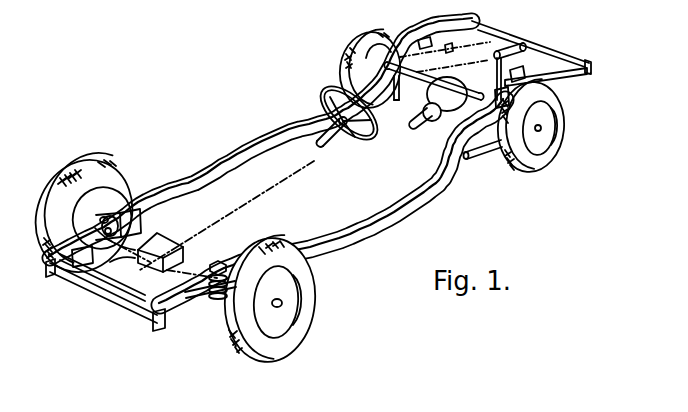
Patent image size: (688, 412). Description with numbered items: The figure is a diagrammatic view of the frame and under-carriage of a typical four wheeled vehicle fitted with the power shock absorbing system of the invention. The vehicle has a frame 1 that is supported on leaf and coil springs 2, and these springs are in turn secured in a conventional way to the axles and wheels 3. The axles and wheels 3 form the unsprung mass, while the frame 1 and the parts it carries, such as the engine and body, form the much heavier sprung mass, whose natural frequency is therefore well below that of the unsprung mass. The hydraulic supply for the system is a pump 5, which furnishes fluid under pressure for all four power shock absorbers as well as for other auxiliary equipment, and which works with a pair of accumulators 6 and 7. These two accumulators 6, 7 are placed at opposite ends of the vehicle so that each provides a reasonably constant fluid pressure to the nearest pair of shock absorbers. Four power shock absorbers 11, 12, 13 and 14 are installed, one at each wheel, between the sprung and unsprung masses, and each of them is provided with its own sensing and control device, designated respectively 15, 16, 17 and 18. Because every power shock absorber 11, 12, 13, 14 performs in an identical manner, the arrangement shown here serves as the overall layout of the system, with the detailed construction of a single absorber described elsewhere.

The frame 1 is at (377, 237).
The leaf and coil springs 2 is at (443, 68).
The axles and wheels 3 is at (363, 38).
The pump 5 is at (162, 240).
The accumulator 6 is at (150, 264).
The accumulator 7 is at (505, 50).
The power shock absorber 11 is at (493, 100).
The power shock absorber 12 is at (401, 90).
The power shock absorber 13 is at (130, 197).
The power shock absorber 14 is at (234, 264).
The sensing and control device 15 is at (522, 66).
The sensing and control device 16 is at (426, 39).
The sensing and control device 17 is at (80, 268).
The sensing and control device 18 is at (148, 307).